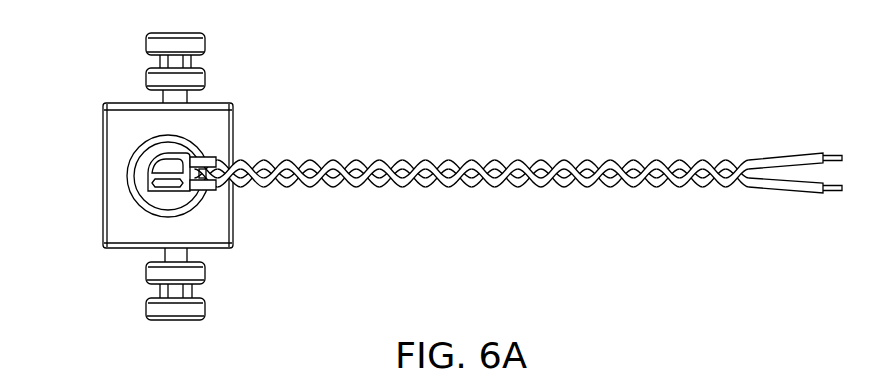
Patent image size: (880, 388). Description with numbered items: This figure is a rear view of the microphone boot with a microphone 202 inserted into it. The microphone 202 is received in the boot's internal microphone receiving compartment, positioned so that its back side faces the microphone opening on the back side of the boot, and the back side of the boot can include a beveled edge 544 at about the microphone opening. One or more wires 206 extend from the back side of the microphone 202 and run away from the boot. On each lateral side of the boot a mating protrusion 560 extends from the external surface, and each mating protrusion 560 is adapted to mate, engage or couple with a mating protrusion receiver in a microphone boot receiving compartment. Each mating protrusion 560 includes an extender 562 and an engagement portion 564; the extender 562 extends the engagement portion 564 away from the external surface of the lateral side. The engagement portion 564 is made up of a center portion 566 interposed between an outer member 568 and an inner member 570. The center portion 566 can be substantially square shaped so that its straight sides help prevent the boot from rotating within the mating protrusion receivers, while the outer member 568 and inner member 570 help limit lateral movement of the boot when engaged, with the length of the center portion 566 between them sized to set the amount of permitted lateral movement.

The microphone 202 is at (194, 152).
The wires 206 is at (421, 159).
The beveled edge 544 is at (128, 187).
The mating protrusion 560 is at (176, 68).
The extender 562 is at (163, 255).
The engagement portion 564 is at (137, 33).
The center portion 566 is at (158, 290).
The outer member 568 is at (207, 307).
The inner member 570 is at (207, 272).